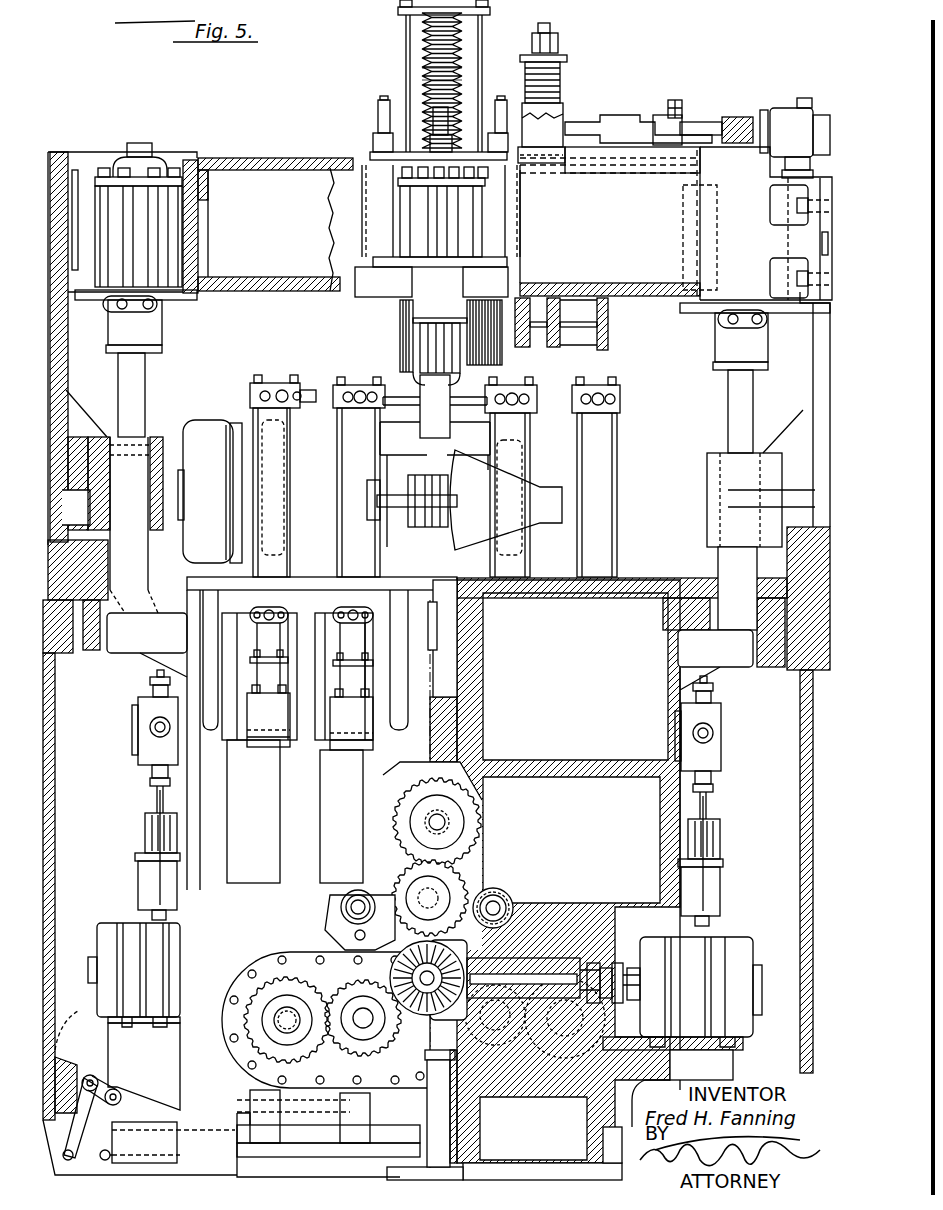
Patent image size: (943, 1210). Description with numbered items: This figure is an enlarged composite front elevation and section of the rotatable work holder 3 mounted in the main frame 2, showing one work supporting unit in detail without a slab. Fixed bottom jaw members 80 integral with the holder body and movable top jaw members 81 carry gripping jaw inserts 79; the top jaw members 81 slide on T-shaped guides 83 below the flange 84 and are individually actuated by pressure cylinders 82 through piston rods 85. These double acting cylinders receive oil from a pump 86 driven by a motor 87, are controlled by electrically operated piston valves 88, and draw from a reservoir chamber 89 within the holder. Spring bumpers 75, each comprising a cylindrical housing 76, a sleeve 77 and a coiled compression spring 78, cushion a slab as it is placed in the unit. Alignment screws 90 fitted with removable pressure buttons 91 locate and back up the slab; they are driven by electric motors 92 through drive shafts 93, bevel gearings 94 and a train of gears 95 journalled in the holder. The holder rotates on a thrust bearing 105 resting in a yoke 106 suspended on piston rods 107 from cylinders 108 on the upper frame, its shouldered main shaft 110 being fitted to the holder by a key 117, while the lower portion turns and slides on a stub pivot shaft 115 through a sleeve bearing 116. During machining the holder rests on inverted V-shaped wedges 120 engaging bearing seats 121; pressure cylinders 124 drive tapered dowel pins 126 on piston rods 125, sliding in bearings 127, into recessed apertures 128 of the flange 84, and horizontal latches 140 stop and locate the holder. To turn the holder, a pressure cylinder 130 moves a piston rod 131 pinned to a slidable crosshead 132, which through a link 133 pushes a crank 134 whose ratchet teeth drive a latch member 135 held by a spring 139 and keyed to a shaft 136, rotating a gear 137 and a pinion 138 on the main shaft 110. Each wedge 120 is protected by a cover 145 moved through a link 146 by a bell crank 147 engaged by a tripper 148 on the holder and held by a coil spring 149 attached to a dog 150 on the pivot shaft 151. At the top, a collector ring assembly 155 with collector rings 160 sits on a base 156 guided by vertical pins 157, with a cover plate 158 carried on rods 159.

The main frame 2 is at (276, 224).
The rotatable work holder 3 is at (629, 519).
The spring bumper 75 is at (340, 915).
The cylindrical housing 76 is at (498, 888).
The sleeve 77 is at (503, 905).
The coiled compression spring 78 is at (517, 912).
The gripping jaw inserts 79 is at (310, 748).
The bottom jaw members 80 is at (270, 1130).
The movable top jaw members 81 is at (278, 716).
The pressure cylinders 82 is at (290, 429).
The T-shaped guides 83 is at (259, 816).
The flange 84 is at (632, 595).
The piston rods 85 is at (275, 682).
The pump 86 is at (549, 511).
The motor 87 is at (314, 501).
The electrically operated piston valves 88 is at (140, 718).
The chamber 89 is at (577, 694).
The alignment screws 90 is at (322, 1058).
The pressure buttons 91 is at (592, 1064).
The electric motors 92 is at (110, 930).
The drive shafts 93 is at (530, 970).
The bevel gearings 94 is at (467, 960).
The train of gears 95 is at (395, 855).
The thrust bearing 105 is at (473, 388).
The yoke 106 is at (452, 419).
The piston rods 107 is at (437, 352).
The cylinders 108 is at (456, 226).
The main shaft 110 is at (410, 385).
The stub pivot shaft 115 is at (430, 1128).
The sleeve bearing 116 is at (430, 1108).
The key 117 is at (432, 640).
The inverted V-shaped wedges 120 is at (237, 1150).
The inverted V-shaped bearing seats 121 is at (237, 1100).
The pressure cylinders 124 is at (158, 332).
The piston rods 125 is at (138, 384).
The tapered dowel pins 126 is at (128, 567).
The bearings 127 is at (160, 437).
The recessed apertures 128 is at (430, 645).
The pressure cylinder 130 is at (784, 108).
The piston rod 131 is at (705, 122).
The slidable crosshead 132 is at (700, 168).
The link 133 is at (633, 120).
The crank 134 is at (565, 128).
The spring held latch member 135 is at (575, 108).
The shaft 136 is at (552, 28).
The gear 137 is at (618, 338).
The pinion 138 is at (425, 333).
The spring 139 is at (562, 62).
The horizontal latches 140 is at (58, 580).
The cover 145 is at (162, 1151).
The link 146 is at (100, 1158).
The bell crank 147 is at (100, 1100).
The tripper 148 is at (162, 1074).
The coil spring 149 is at (68, 1044).
The dog 150 is at (93, 1075).
The bell crank pivot shaft 151 is at (95, 1078).
The collector ring assembly 155 is at (412, 55).
The base 156 is at (390, 148).
The vertical pins 157 is at (378, 113).
The cover plate 158 is at (398, 12).
The rods 159 is at (406, 35).
The collector rings 160 is at (430, 82).